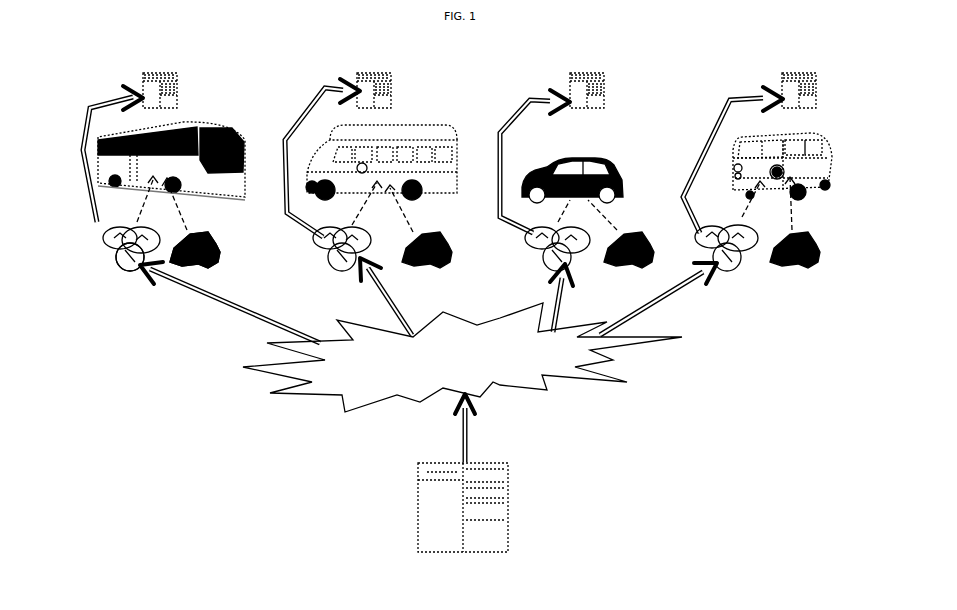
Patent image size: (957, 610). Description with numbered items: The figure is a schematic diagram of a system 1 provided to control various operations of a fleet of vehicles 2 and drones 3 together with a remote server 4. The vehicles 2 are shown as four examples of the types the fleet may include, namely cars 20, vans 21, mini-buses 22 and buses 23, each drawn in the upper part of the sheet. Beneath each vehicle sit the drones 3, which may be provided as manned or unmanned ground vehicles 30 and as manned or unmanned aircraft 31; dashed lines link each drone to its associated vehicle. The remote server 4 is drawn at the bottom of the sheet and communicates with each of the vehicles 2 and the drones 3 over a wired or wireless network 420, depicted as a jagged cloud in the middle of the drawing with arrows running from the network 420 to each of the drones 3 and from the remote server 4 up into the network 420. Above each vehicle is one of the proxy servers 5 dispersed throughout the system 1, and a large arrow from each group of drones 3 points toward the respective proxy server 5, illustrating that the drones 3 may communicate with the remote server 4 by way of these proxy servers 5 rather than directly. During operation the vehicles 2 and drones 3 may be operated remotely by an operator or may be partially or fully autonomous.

The system 1 is at (140, 485).
The vehicles 2 is at (489, 160).
The cars 20 is at (600, 163).
The vans 21 is at (813, 147).
The mini-buses 22 is at (410, 130).
The buses 23 is at (197, 122).
The drones 3 is at (112, 243).
The ground vehicles 30 is at (213, 257).
The aircraft 31 is at (120, 240).
The remote server 4 is at (436, 513).
The proxy servers 5 is at (178, 80).
The network 420 is at (363, 386).